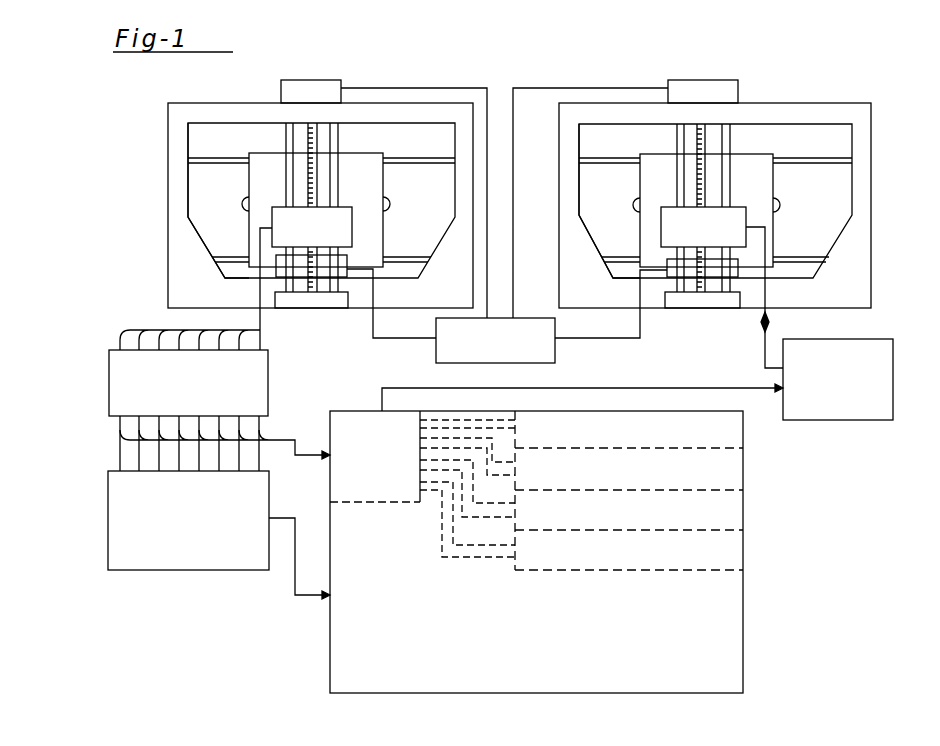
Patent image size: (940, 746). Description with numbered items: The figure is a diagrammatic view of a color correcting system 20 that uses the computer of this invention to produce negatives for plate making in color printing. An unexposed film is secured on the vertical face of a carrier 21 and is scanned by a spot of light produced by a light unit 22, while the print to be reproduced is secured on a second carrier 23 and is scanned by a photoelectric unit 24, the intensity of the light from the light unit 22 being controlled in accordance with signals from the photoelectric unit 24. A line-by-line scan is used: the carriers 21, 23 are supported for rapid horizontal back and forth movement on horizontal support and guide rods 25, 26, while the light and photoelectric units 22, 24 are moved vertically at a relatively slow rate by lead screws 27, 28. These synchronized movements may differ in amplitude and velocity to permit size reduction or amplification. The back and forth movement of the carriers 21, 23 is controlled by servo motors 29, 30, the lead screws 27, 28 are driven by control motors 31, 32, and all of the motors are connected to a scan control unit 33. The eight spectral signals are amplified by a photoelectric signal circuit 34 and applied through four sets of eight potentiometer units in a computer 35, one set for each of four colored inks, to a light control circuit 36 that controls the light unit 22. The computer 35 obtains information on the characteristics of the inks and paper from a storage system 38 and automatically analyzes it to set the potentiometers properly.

The color correcting system 20 is at (692, 210).
The carrier 21 is at (768, 185).
The light unit 22 is at (732, 223).
The carrier 23 is at (373, 190).
The photoelectric unit 24 is at (340, 236).
The horizontal support and guide rod 25 is at (618, 257).
The horizontal support and guide rod 26 is at (227, 256).
The lead screw 27 is at (703, 150).
The lead screw 28 is at (314, 144).
The servo motor 29 is at (713, 274).
The servo motor 30 is at (325, 271).
The control motor 31 is at (722, 80).
The control motor 32 is at (332, 79).
The scan control unit 33 is at (553, 352).
The photoelectric signal circuit 34 is at (115, 392).
The computer 35 is at (730, 634).
The light control circuit 36 is at (883, 377).
The storage system 38 is at (113, 517).